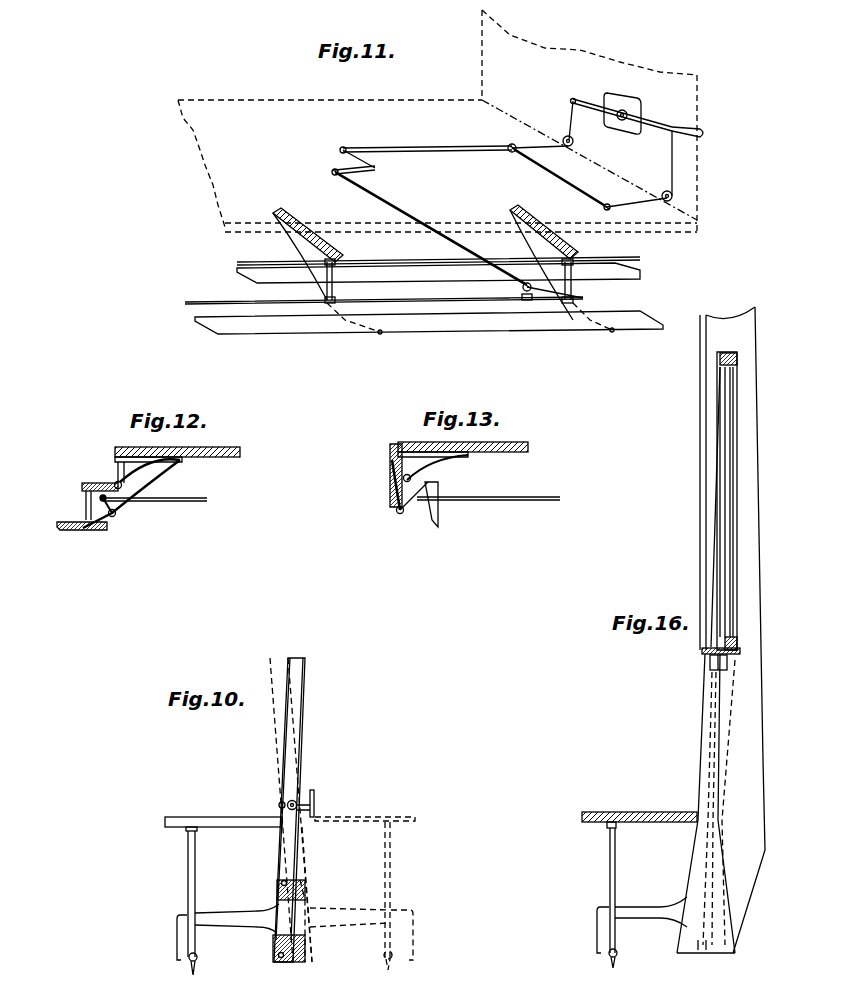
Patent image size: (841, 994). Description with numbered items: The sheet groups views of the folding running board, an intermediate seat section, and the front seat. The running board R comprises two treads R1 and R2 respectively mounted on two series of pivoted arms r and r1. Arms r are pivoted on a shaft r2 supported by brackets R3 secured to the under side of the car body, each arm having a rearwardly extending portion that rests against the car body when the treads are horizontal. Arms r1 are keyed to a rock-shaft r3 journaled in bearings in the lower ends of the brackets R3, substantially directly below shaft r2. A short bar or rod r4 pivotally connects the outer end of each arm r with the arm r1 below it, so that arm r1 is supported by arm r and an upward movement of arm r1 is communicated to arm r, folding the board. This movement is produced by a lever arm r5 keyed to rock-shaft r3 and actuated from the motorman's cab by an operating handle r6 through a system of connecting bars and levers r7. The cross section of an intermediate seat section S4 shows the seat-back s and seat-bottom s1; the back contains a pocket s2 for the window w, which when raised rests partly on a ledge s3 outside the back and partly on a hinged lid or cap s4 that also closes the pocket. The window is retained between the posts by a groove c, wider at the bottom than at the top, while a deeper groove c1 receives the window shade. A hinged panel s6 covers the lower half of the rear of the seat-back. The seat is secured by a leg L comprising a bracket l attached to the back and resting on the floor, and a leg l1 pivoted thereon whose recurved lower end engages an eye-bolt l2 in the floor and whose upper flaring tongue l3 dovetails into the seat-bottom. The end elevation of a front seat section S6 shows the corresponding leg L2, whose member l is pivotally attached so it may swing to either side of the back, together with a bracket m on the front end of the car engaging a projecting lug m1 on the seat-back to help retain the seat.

In FIG. 11, the running board R is at (366, 306).
In FIG. 11, the tread R1 is at (438, 270).
In FIG. 12, the tread R1 is at (102, 480).
In FIG. 11, the tread R2 is at (429, 322).
In FIG. 12, the tread R2 is at (66, 522).
In FIG. 11, the bracket R3 is at (300, 235).
In FIG. 13, the bracket R3 is at (455, 460).
In FIG. 11, the arm r is at (335, 250).
In FIG. 12, the arm r is at (140, 470).
In FIG. 13, the arm r is at (438, 488).
In FIG. 11, the arm r1 is at (327, 307).
In FIG. 12, the arm r1 is at (92, 527).
In FIG. 13, the arm r1 is at (390, 482).
In FIG. 11, the shaft r2 is at (410, 237).
In FIG. 11, the rock-shaft r3 is at (436, 300).
In FIG. 13, the rock-shaft r3 is at (400, 514).
In FIG. 12, the bar or rod r4 is at (100, 500).
In FIG. 13, the bar or rod r4 is at (392, 460).
In FIG. 11, the lever arm r5 is at (523, 288).
In FIG. 12, the lever arm r5 is at (115, 516).
In FIG. 11, the operating handle r6 is at (672, 110).
In FIG. 11, the connecting bars and levers r7 is at (402, 205).
In FIG. 16, the groove c is at (720, 510).
In FIG. 16, the groove c1 is at (710, 447).
In FIG. 16, the window w is at (730, 530).
In FIG. 16, the seat-back s is at (706, 717).
In FIG. 10, the seat-back s is at (305, 722).
In FIG. 16, the seat-bottom s1 is at (668, 812).
In FIG. 10, the seat-bottom s1 is at (230, 815).
In FIG. 16, the pocket s2 is at (703, 685).
In FIG. 16, the ledge s3 is at (728, 663).
In FIG. 16, the lid or cap s4 is at (703, 650).
In FIG. 16, the seat section S4 is at (632, 718).
In FIG. 16, the panel s6 is at (728, 740).
In FIG. 10, the panel s6 is at (291, 810).
In FIG. 10, the front seat section S6 is at (187, 756).
In FIG. 16, the bracket l is at (644, 922).
In FIG. 10, the bracket l is at (224, 915).
In FIG. 16, the leg l1 is at (616, 872).
In FIG. 10, the leg l1 is at (197, 868).
In FIG. 16, the eye-bolt l2 is at (617, 957).
In FIG. 10, the eye-bolt l2 is at (198, 958).
In FIG. 16, the flaring tongue l3 is at (608, 826).
In FIG. 16, the leg L is at (588, 930).
In FIG. 10, the leg L2 is at (281, 929).
In FIG. 10, the bracket m is at (314, 792).
In FIG. 10, the projecting lug m1 is at (296, 800).